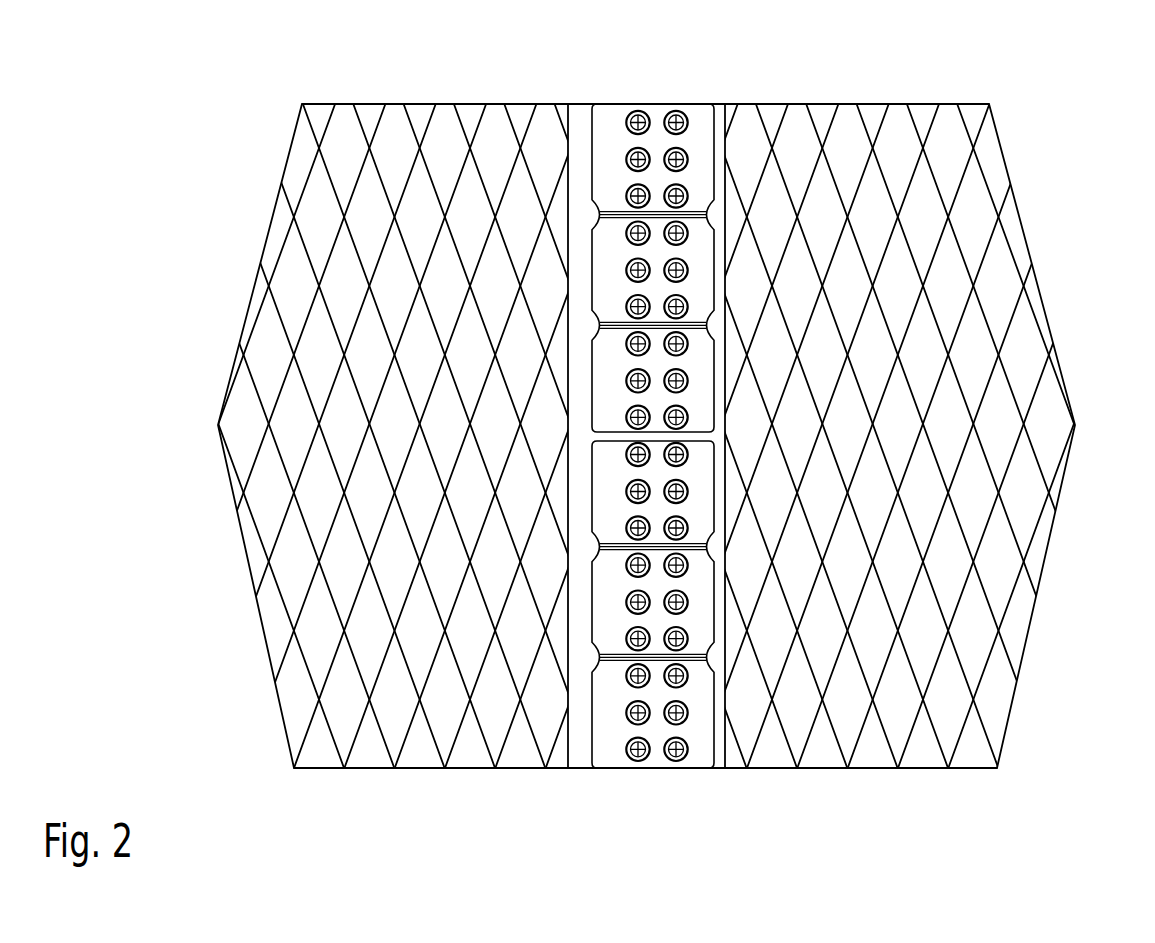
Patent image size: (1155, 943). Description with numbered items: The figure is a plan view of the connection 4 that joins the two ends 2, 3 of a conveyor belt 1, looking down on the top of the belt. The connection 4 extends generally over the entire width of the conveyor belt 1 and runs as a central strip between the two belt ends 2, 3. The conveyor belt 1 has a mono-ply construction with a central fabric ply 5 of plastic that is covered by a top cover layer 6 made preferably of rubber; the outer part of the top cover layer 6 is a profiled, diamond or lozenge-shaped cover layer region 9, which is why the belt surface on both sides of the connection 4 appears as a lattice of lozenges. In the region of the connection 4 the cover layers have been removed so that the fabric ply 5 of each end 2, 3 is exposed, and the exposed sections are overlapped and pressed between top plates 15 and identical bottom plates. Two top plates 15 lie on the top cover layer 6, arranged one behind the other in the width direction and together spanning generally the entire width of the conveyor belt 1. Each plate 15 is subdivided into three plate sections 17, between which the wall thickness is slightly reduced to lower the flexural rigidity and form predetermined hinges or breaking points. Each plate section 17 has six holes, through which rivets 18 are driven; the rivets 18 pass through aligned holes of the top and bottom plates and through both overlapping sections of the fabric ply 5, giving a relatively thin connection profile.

The conveyor belt 1 is at (1071, 159).
The end of the conveyor belt 2 is at (591, 791).
The end of the conveyor belt 3 is at (724, 790).
The connection 4 is at (686, 64).
The fabric ply 5 is at (578, 118).
The top cover layer 6 is at (1056, 306).
The lozenge-shaped cover layer region 9 is at (900, 125).
The top plate 15 is at (735, 217).
The plate section 17 is at (700, 497).
The rivet 18 is at (669, 152).